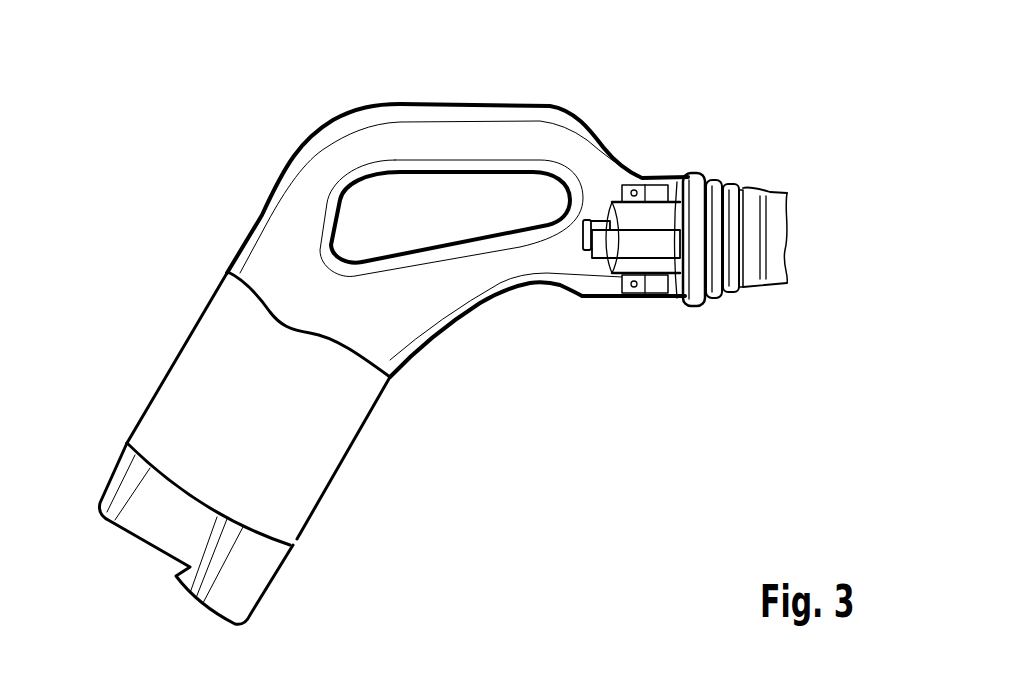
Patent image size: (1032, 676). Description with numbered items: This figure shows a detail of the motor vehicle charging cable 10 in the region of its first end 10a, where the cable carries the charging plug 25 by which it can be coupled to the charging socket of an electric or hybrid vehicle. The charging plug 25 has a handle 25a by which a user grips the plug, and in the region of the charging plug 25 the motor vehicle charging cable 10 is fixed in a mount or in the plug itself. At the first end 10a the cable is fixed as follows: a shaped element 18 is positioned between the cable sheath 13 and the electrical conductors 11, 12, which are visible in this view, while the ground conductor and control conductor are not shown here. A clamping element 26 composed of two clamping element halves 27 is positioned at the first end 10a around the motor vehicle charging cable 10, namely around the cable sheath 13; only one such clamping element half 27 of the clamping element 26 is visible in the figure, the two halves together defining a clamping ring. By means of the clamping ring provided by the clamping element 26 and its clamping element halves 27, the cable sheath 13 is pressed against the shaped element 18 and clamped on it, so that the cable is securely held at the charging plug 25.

The motor vehicle charging cable 10 is at (778, 240).
The first end 10a is at (757, 175).
The electrical conductor 11 is at (663, 248).
The electrical conductor 12 is at (593, 218).
The cable sheath 13 is at (662, 194).
The shaped element 18 is at (644, 212).
The charging plug 25 is at (310, 92).
The handle 25a is at (445, 106).
The clamping element 26 is at (632, 291).
The clamping element half 27 is at (632, 291).